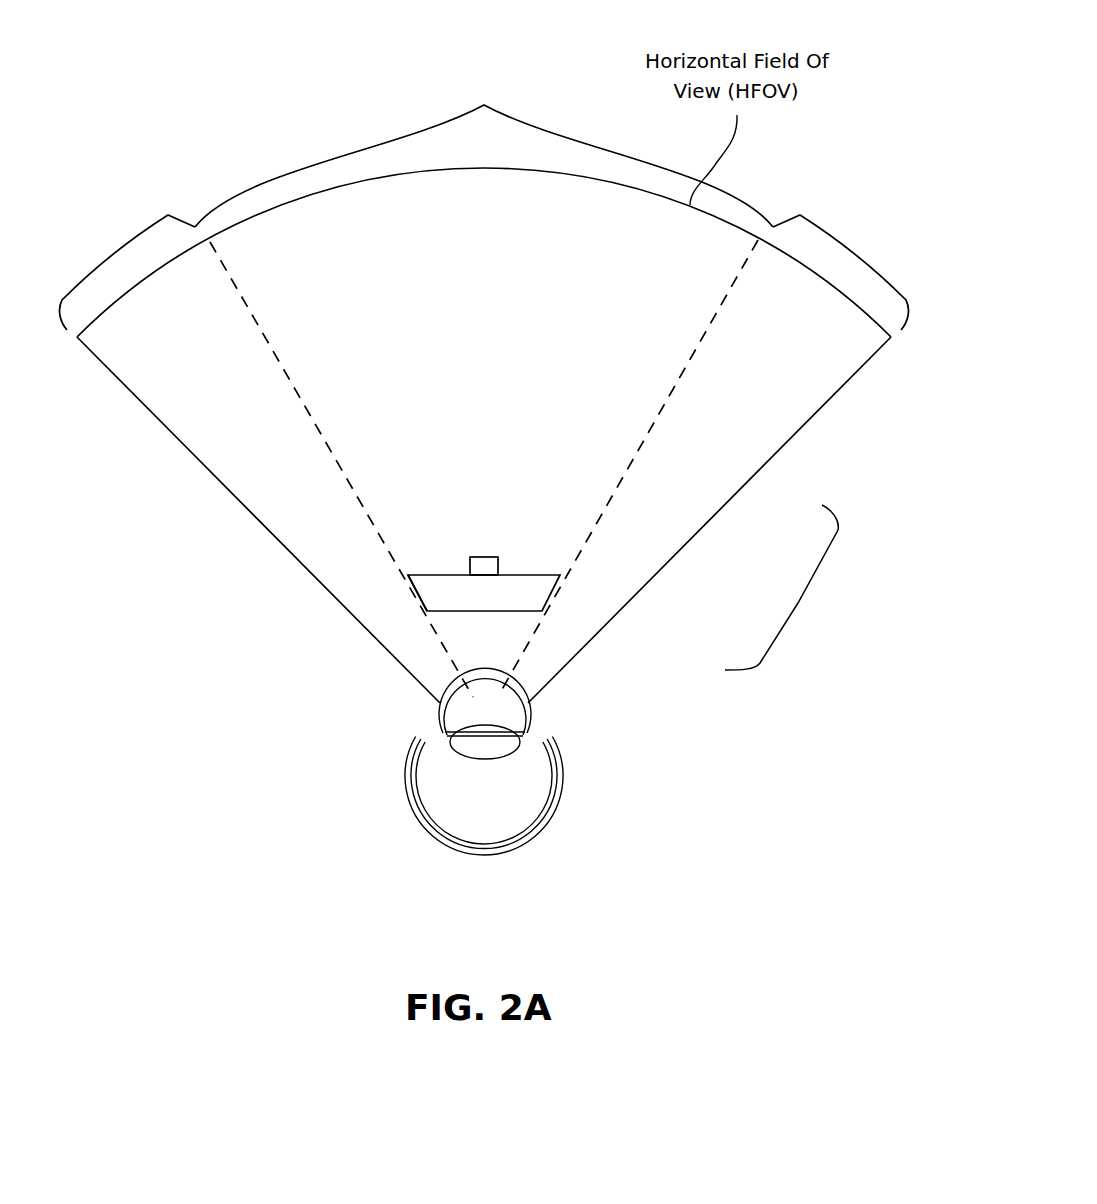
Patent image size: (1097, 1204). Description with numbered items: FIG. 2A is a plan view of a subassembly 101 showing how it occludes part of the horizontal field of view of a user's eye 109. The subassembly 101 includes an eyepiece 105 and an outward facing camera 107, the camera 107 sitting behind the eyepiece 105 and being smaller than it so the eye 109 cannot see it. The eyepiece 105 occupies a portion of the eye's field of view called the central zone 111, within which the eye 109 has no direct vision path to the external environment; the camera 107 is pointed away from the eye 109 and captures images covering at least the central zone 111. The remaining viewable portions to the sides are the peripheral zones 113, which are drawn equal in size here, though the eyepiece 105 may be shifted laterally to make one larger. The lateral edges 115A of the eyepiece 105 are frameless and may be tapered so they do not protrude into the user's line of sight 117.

The subassembly 101 is at (798, 603).
The eyepiece 105 is at (553, 597).
The camera 107 is at (483, 563).
The eye 109 is at (528, 810).
The central zone 111 is at (484, 137).
The peripheral zones 113 is at (873, 223).
The lateral edges 115A is at (417, 597).
The line of sight 117 is at (356, 498).